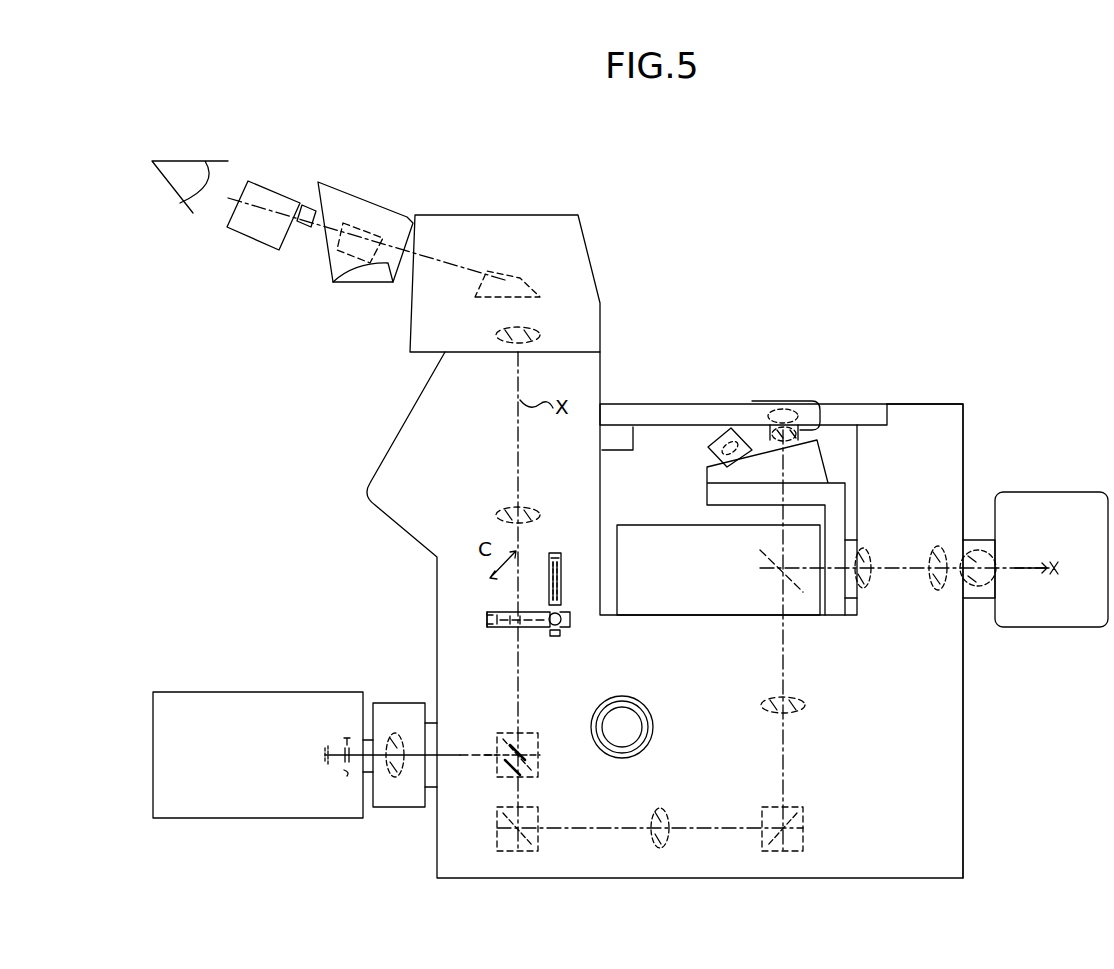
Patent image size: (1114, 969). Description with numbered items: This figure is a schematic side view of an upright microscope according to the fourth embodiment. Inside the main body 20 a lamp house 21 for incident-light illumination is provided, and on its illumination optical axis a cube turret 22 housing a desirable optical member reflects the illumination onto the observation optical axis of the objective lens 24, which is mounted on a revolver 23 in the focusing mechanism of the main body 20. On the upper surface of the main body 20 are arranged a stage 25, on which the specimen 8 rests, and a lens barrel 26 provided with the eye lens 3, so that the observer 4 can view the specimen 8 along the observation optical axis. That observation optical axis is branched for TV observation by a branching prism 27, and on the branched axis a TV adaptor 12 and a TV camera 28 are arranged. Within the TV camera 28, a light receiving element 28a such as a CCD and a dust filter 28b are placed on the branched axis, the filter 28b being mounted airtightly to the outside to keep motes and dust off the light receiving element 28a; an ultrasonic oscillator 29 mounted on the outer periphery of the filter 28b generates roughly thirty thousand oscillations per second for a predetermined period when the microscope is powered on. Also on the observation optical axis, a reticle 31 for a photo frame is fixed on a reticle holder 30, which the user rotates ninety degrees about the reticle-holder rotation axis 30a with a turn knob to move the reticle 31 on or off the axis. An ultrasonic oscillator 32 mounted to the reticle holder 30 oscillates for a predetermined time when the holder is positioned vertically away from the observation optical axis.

The eye lens 3 is at (247, 229).
The observer 4 is at (185, 160).
The specimen 8 is at (784, 402).
The TV adaptor 12 is at (400, 807).
The main body 20 is at (932, 404).
The lamp house 21 is at (1048, 492).
The cube turret 22 is at (808, 615).
The revolver 23 is at (707, 472).
The objective lens 24 is at (818, 428).
The stage 25 is at (660, 404).
The lens barrel 26 is at (600, 248).
The branching prism 27 is at (540, 755).
The TV camera 28 is at (200, 818).
The light receiving element 28a is at (328, 752).
The filter 28b is at (345, 757).
The ultrasonic oscillator 29 is at (349, 778).
The reticle holder 30 is at (508, 610).
The reticle-holder rotation axis 30a is at (557, 636).
The reticle 31 is at (487, 617).
The ultrasonic oscillator 32 is at (487, 625).